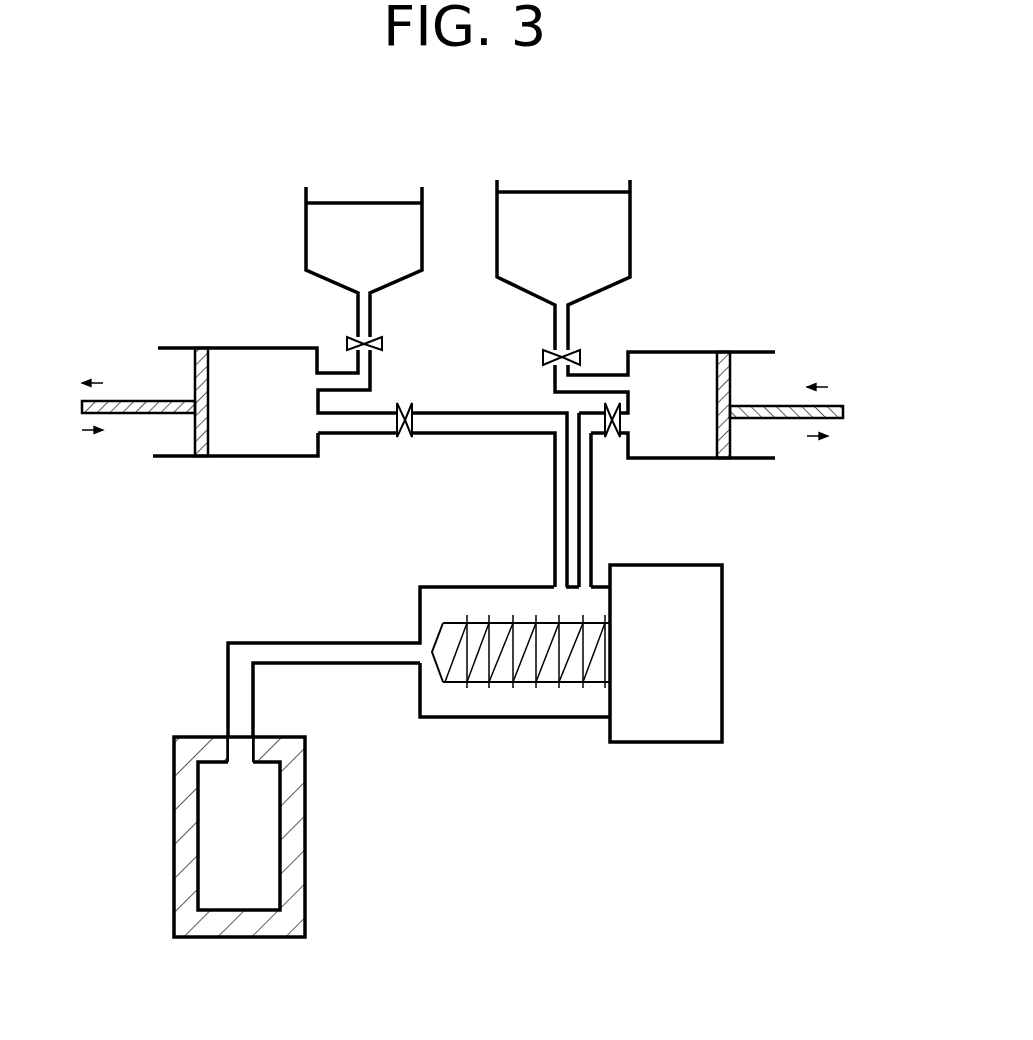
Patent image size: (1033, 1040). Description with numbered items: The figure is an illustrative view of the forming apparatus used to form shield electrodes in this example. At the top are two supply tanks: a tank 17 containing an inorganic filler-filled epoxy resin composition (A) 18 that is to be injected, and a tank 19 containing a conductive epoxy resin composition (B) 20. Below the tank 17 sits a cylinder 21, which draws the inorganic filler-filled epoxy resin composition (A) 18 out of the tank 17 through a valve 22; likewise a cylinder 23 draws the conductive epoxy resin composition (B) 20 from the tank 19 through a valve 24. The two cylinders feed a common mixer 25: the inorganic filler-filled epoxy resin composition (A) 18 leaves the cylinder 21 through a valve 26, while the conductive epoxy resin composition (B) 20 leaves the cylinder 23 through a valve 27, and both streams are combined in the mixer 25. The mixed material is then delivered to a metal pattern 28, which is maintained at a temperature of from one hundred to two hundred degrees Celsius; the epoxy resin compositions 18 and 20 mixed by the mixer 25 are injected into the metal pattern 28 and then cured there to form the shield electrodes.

The tank 17 is at (306, 227).
The inorganic filler-filled epoxy resin composition (A) 18 is at (374, 202).
The tank 19 is at (630, 222).
The conductive epoxy resin composition (B) 20 is at (578, 192).
The cylinder 21 is at (250, 458).
The valve 22 is at (378, 331).
The cylinder 23 is at (695, 460).
The valve 24 is at (572, 350).
The mixer 25 is at (545, 718).
The valve 26 is at (404, 440).
The valve 27 is at (612, 440).
The metal pattern 28 is at (306, 838).